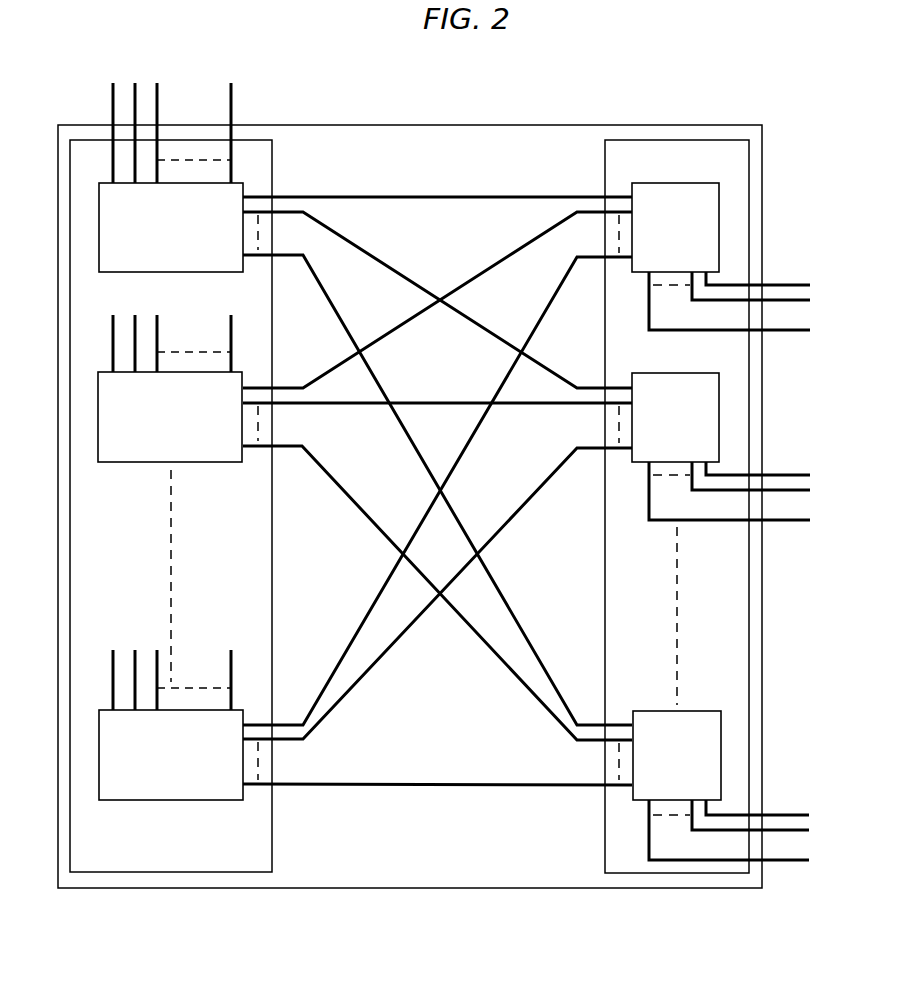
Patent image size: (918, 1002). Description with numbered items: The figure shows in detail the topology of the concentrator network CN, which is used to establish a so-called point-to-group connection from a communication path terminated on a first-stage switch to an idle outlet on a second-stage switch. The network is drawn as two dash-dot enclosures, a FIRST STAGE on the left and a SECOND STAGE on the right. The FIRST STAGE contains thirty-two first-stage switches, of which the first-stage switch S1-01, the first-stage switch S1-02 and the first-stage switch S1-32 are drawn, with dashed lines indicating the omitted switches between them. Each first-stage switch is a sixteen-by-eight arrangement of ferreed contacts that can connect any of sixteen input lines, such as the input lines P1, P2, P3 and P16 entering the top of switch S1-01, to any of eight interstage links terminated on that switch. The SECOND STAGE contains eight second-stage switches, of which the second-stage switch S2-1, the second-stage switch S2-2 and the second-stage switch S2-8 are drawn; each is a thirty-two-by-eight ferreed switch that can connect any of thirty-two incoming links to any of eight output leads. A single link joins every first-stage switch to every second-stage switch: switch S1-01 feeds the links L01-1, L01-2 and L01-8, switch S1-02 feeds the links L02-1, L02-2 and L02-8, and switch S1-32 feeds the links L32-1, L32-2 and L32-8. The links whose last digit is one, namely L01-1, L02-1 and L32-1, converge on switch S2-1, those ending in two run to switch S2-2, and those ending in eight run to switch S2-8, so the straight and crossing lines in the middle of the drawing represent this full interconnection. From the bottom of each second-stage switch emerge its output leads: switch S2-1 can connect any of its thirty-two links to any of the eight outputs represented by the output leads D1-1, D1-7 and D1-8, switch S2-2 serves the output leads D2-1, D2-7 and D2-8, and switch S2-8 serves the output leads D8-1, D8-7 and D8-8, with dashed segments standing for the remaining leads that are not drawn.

The concentrator network CN is at (563, 125).
The first stage FIRST STAGE is at (272, 152).
The second stage SECOND STAGE is at (605, 150).
The input line P1 is at (112, 100).
The input line P2 is at (135, 92).
The input line P3 is at (157, 97).
The input line P16 is at (231, 97).
The first-stage switch S1-01 is at (171, 227).
The first-stage switch S1-02 is at (170, 417).
The first-stage switch S1-32 is at (171, 755).
The second-stage switch S2-1 is at (675, 227).
The second-stage switch S2-2 is at (675, 417).
The second-stage switch S2-8 is at (677, 755).
The interstage link L01-1 is at (312, 195).
The interstage link L01-2 is at (326, 225).
The interstage link L01-8 is at (324, 296).
The interstage link L02-1 is at (335, 363).
The interstage link L02-2 is at (293, 406).
The interstage link L02-8 is at (322, 471).
The interstage link L32-1 is at (335, 668).
The interstage link L32-2 is at (322, 728).
The interstage link L32-8 is at (331, 781).
The output lead D1-8 is at (773, 285).
The output lead D1-7 is at (787, 300).
The output lead D1-1 is at (779, 333).
The output lead D2-8 is at (769, 475).
The output lead D2-7 is at (784, 490).
The output lead D2-1 is at (785, 522).
The output lead D8-8 is at (771, 815).
The output lead D8-7 is at (784, 830).
The output lead D8-1 is at (785, 862).